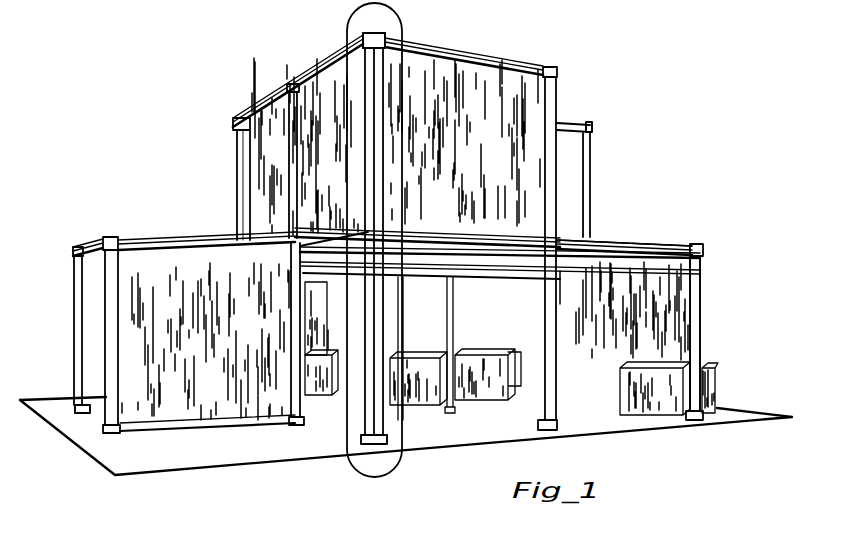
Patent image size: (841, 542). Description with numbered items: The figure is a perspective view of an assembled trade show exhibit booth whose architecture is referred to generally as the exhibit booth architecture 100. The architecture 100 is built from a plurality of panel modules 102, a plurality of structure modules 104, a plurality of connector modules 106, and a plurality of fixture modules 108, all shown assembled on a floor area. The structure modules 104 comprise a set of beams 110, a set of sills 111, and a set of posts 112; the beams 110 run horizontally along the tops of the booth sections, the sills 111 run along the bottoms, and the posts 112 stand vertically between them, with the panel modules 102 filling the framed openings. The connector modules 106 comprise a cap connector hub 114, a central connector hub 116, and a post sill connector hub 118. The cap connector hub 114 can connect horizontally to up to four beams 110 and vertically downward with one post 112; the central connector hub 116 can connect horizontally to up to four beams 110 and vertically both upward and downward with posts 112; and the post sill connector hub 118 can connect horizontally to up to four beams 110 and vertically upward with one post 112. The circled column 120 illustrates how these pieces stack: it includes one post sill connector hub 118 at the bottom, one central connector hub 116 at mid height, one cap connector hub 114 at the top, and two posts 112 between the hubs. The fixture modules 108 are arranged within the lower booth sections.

The exhibit booth architecture 100 is at (208, 166).
The panel module 102 is at (485, 204).
The structure module 104 is at (716, 268).
The connector module 106 is at (588, 128).
The fixture module 108 is at (630, 398).
The beam 110 is at (290, 86).
The sill 111 is at (230, 426).
The post 112 is at (383, 122).
The cap connector hub 114 is at (390, 24).
The central connector hub 116 is at (510, 225).
The post sill connector hub 118 is at (352, 462).
The column 120 is at (392, 478).